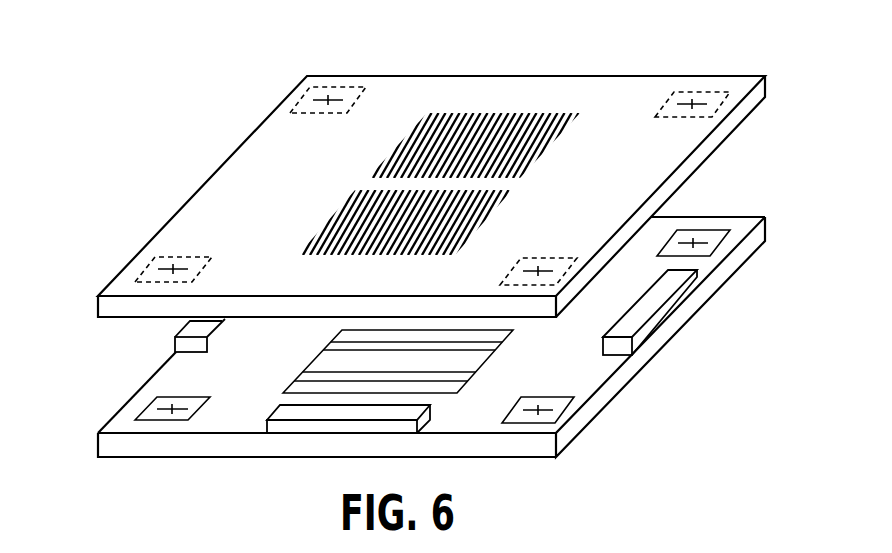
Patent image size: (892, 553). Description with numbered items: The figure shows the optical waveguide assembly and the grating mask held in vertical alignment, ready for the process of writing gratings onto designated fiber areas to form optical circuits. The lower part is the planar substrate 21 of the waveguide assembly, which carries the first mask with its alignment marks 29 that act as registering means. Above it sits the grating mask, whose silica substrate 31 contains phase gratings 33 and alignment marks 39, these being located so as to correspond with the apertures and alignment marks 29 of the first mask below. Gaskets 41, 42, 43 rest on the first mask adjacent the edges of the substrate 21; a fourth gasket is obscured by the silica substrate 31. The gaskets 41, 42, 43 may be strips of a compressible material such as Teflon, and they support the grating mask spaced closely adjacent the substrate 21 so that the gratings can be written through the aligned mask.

The substrate 21 is at (737, 250).
The alignment marks 29 is at (717, 230).
The silica substrate 31 is at (586, 188).
The phase gratings 33 is at (500, 112).
The alignment marks 39 is at (306, 92).
The gasket 41 is at (660, 317).
The gasket 42 is at (308, 428).
The gasket 43 is at (192, 328).